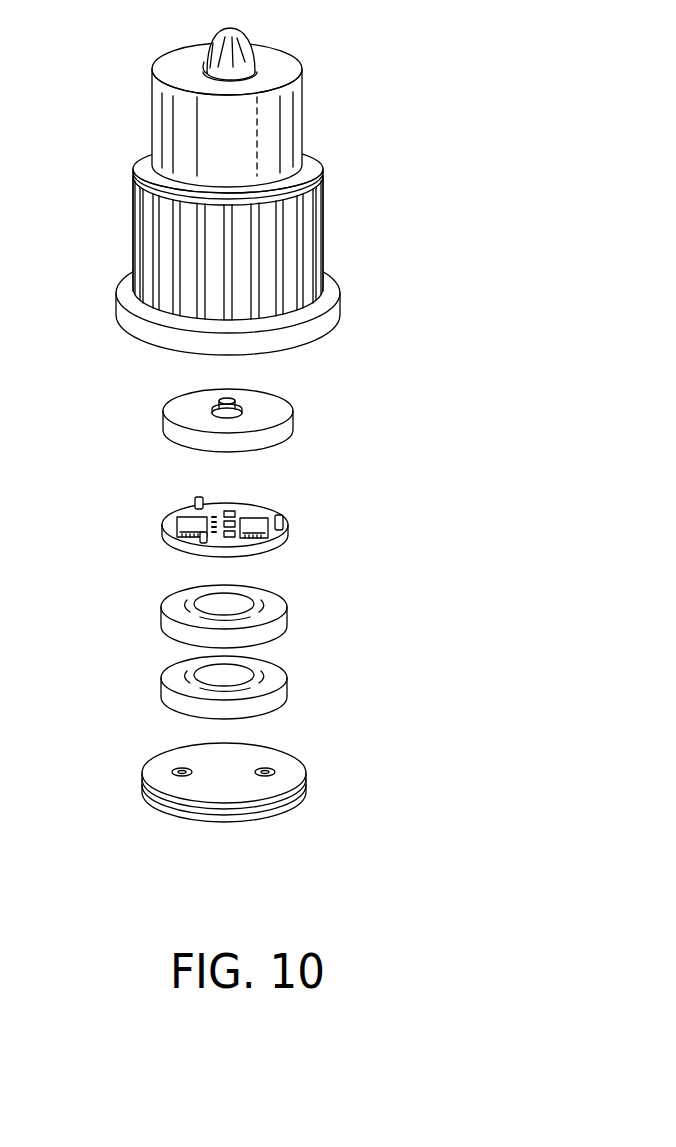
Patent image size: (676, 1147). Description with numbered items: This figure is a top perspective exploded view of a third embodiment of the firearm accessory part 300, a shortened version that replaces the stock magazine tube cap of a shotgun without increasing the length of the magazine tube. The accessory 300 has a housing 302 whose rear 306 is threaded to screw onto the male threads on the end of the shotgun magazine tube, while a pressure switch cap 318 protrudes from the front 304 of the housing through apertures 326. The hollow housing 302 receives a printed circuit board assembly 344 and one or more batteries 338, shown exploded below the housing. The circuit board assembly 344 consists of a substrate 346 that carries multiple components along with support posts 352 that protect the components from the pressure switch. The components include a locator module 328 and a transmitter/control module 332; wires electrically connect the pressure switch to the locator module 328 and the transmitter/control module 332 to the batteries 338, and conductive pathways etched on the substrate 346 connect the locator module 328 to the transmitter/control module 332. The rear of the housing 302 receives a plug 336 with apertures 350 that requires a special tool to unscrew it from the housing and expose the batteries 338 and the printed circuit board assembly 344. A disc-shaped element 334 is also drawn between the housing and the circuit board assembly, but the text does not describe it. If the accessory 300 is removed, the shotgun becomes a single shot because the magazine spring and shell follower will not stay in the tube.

The firearm accessory part 300 is at (412, 455).
The housing 302 is at (318, 227).
The front of the housing 304 is at (272, 75).
The rear of the housing 306 is at (298, 347).
The pressure switch cap 318 is at (248, 43).
The apertures 326 is at (205, 68).
The locator module 328 is at (187, 518).
The transmitter/control module 332 is at (253, 517).
The switch disc 334 is at (237, 403).
The plug 336 is at (293, 777).
The batteries 338 is at (273, 670).
The printed circuit board assembly 344 is at (167, 548).
The substrate 346 is at (287, 533).
The apertures 350 is at (268, 762).
The support posts 352 is at (198, 497).